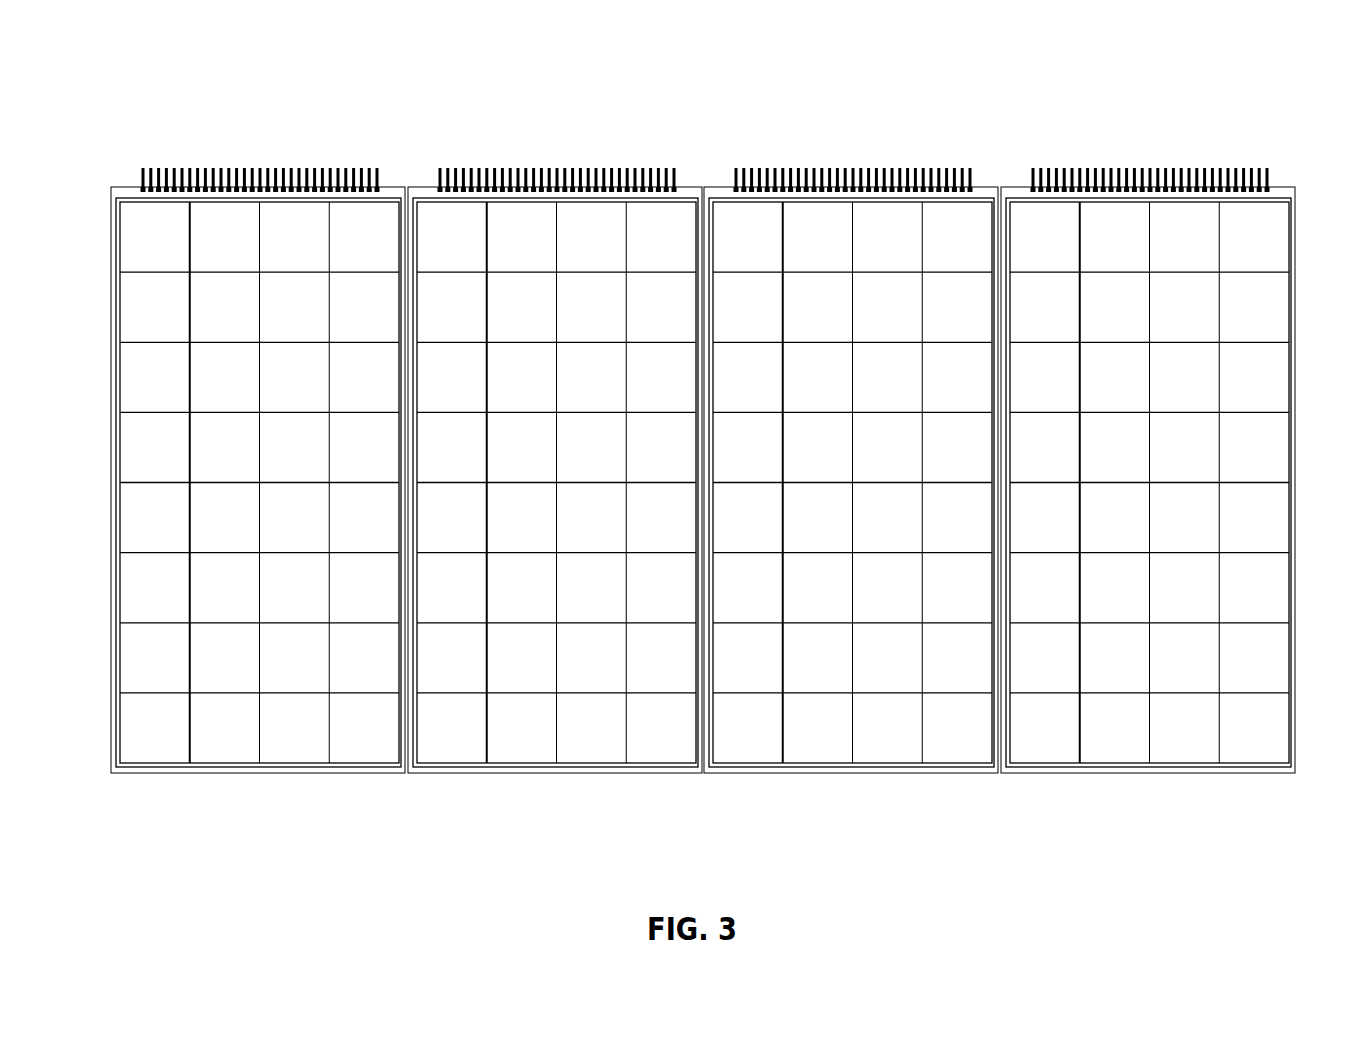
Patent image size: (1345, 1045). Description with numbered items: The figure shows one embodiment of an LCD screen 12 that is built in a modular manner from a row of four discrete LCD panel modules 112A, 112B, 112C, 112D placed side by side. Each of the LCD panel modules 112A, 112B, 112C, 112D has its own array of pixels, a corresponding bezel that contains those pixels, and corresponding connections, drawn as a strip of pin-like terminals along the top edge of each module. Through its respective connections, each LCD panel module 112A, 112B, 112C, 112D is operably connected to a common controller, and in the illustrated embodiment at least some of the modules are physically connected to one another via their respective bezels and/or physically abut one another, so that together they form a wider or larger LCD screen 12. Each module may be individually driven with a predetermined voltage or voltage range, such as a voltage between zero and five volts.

The LCD screen 12 is at (1276, 97).
The LCD panel module 112A is at (242, 497).
The LCD panel module 112B is at (538, 497).
The LCD panel module 112C is at (835, 499).
The LCD panel module 112D is at (1131, 498).